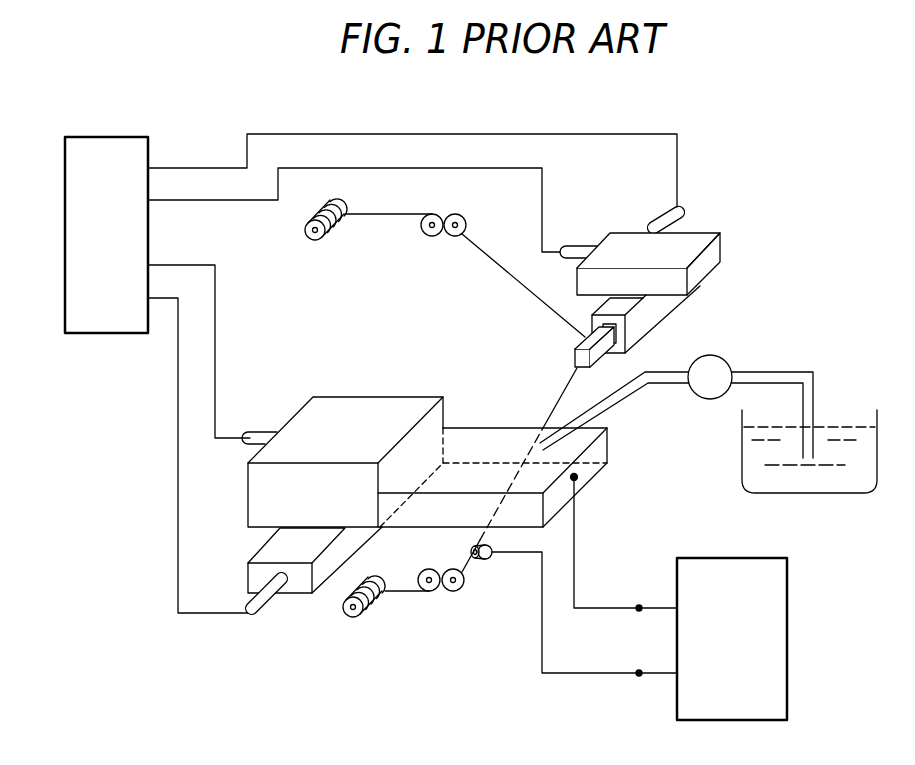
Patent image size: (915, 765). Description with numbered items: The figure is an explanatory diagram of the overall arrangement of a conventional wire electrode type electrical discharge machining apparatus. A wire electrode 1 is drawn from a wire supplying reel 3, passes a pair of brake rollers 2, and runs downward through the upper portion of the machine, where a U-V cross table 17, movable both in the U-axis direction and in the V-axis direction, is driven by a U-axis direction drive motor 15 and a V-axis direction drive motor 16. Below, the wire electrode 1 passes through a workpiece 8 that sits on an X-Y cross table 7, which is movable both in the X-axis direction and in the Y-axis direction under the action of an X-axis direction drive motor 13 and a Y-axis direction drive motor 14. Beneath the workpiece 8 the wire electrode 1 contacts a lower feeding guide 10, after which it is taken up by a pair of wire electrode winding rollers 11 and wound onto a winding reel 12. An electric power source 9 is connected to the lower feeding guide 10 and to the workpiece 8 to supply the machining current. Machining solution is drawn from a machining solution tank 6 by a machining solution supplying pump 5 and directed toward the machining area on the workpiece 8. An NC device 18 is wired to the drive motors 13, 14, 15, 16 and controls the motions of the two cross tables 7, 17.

The wire electrode 1 is at (512, 292).
The pair of brake rollers 2 is at (433, 237).
The wire supplying reel 3 is at (318, 241).
The machining solution supplying pump 5 is at (726, 358).
The machining solution tank 6 is at (856, 415).
The X-Y cross table 7 is at (397, 397).
The workpiece 8 is at (610, 447).
The electric power source 9 is at (765, 557).
The lower feeding guide 10 is at (485, 561).
The pair of wire electrode winding rollers 11 is at (452, 592).
The winding reel 12 is at (356, 618).
The X-axis direction drive motor 13 is at (259, 432).
The Y-axis direction drive motor 14 is at (271, 613).
The U-axis direction drive motor 15 is at (581, 247).
The V-axis direction drive motor 16 is at (685, 221).
The U-V cross table 17 is at (720, 246).
The NC device 18 is at (149, 137).